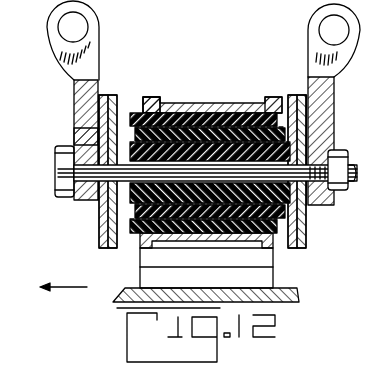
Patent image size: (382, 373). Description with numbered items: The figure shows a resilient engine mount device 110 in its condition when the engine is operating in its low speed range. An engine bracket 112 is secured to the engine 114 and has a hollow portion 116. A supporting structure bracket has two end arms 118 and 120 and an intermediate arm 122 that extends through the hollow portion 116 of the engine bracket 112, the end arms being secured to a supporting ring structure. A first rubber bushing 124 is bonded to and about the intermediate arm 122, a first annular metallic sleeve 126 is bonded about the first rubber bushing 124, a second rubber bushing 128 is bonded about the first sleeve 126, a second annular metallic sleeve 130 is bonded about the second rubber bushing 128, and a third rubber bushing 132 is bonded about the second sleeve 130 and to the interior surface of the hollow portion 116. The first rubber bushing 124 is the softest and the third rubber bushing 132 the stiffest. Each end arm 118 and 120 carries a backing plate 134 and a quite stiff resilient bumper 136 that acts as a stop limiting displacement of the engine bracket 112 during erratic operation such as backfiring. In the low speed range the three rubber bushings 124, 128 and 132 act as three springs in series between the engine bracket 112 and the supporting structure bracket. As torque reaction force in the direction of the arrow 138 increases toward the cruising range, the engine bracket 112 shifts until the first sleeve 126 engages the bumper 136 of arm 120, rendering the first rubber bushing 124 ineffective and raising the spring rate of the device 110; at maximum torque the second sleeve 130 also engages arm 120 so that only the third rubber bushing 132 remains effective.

The resilient engine mount device 110 is at (230, 155).
The engine bracket 112 is at (275, 97).
The engine 114 is at (280, 288).
The hollow portion 116 is at (182, 104).
The end arm 118 is at (335, 60).
The end arm 120 is at (75, 57).
The intermediate arm 122 is at (97, 200).
The first rubber bushing 124 is at (90, 135).
The first annular metallic sleeve 126 is at (328, 138).
The second rubber bushing 128 is at (97, 117).
The second annular metallic sleeve 130 is at (212, 104).
The third rubber bushing 132 is at (162, 98).
The backing plate 134 is at (112, 95).
The resilient bumper 136 is at (100, 94).
The arrow 138 is at (87, 287).